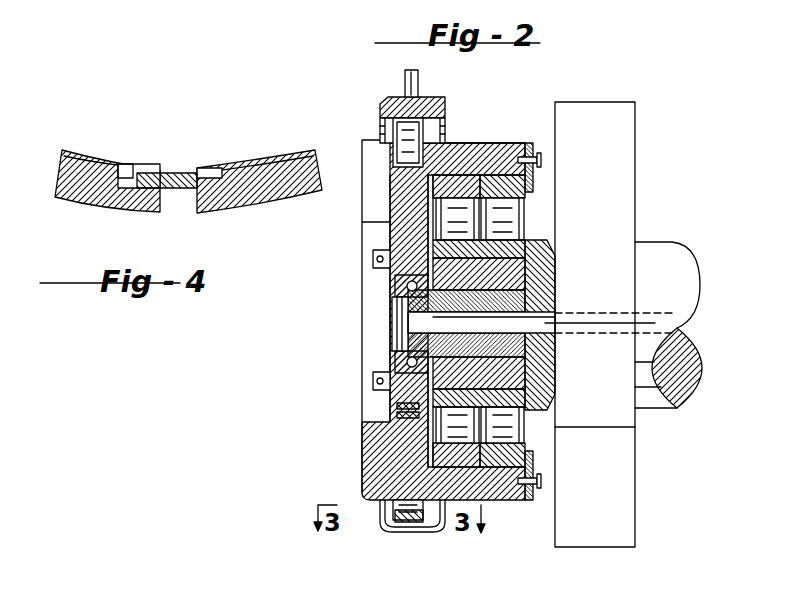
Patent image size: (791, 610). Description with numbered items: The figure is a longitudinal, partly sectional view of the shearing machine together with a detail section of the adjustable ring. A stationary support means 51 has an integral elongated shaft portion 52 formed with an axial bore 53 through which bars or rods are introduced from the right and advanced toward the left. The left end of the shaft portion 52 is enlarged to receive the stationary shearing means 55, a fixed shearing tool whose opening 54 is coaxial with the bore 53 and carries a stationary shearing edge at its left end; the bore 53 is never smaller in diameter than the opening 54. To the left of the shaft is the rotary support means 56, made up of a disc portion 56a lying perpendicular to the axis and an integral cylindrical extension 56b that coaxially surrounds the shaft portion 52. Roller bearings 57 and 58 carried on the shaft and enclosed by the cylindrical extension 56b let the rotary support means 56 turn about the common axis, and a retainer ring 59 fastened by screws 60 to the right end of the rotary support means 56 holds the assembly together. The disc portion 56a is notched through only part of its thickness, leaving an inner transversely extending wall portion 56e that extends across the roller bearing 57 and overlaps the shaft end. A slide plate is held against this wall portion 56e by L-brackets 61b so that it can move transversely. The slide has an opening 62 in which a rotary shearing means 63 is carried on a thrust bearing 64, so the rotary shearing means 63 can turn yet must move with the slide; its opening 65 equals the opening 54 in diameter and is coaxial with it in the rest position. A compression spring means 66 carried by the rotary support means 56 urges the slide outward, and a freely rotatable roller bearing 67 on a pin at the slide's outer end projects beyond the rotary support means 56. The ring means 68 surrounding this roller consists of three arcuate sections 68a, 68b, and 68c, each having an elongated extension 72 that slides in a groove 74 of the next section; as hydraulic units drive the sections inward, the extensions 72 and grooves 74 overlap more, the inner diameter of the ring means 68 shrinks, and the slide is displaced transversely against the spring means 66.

In FIG. 2, the stationary support means 51 is at (622, 458).
In FIG. 2, the stationary shaft portion 52 is at (533, 404).
In FIG. 2, the bore 53 is at (534, 328).
In FIG. 2, the opening 54 is at (503, 320).
In FIG. 2, the stationary shearing means 55 is at (527, 365).
In FIG. 2, the rotary support means 56 is at (370, 480).
In FIG. 2, the disc portion 56a is at (365, 288).
In FIG. 2, the cylindrical extension 56b is at (493, 143).
In FIG. 2, the inner transversely extending wall portion 56e is at (427, 217).
In FIG. 2, the roller bearing 57 is at (455, 182).
In FIG. 2, the roller bearing 58 is at (497, 182).
In FIG. 2, the retainer ring 59 is at (530, 143).
In FIG. 2, the screws 60 is at (541, 159).
In FIG. 2, the L-brackets 61b is at (374, 259).
In FIG. 2, the opening 62 is at (394, 333).
In FIG. 2, the rotary shearing means 63 is at (410, 340).
In FIG. 2, the thrust bearing 64 is at (413, 347).
In FIG. 2, the opening 65 is at (413, 317).
In FIG. 2, the spring means 66 is at (402, 428).
In FIG. 2, the roller bearing 67 is at (414, 121).
In FIG. 2, the ring means 68 is at (376, 550).
In FIG. 2, the arcuate section 68a is at (405, 545).
In FIG. 4, the arcuate section 68a is at (112, 206).
In FIG. 4, the arcuate section 68b is at (232, 206).
In FIG. 2, the arcuate section 68c is at (386, 98).
In FIG. 2, the extension 72 is at (422, 537).
In FIG. 4, the extension 72 is at (178, 182).
In FIG. 4, the groove 74 is at (127, 170).